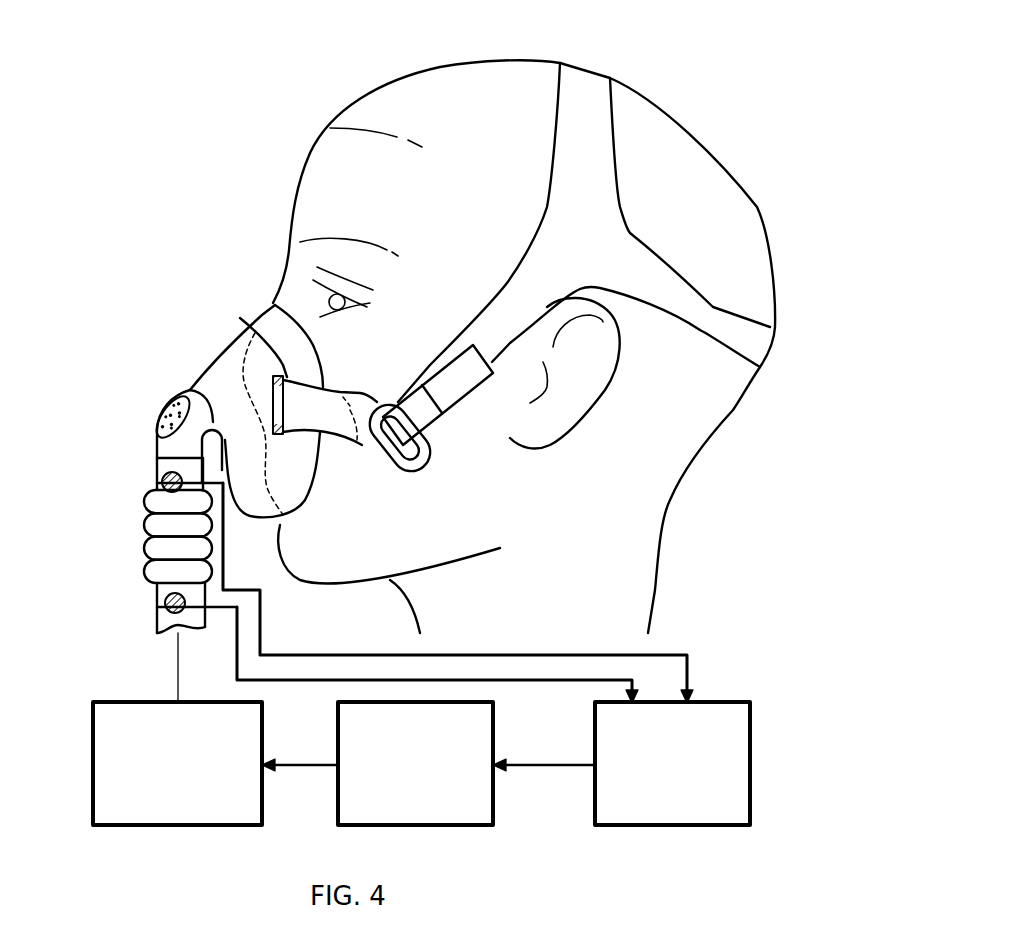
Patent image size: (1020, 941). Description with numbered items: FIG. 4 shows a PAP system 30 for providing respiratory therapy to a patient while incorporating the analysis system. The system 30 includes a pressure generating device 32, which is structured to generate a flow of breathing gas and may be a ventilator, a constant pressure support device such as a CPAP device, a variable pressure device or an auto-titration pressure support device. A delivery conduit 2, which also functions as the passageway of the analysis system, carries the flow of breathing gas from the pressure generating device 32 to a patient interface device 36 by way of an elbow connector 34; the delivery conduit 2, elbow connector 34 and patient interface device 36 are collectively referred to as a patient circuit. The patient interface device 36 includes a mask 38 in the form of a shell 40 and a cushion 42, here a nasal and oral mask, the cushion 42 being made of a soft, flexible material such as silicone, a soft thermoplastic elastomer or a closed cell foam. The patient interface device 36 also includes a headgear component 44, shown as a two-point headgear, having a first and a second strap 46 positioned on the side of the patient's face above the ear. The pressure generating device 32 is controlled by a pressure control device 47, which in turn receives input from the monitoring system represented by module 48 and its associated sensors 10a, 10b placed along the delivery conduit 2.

The system 30 is at (118, 143).
The patient interface device 36 is at (112, 277).
The mask 38 is at (228, 320).
The shell 40 is at (216, 370).
The elbow connector 34 is at (178, 392).
The cushion 42 is at (270, 362).
The headgear component 44 is at (583, 90).
The strap 46 is at (506, 304).
The sensor 10b is at (157, 483).
The sensor 10a is at (157, 606).
The delivery conduit 2 is at (150, 620).
The pressure generating device 32 is at (186, 826).
The pressure control device 47 is at (422, 827).
The module 48 is at (680, 827).